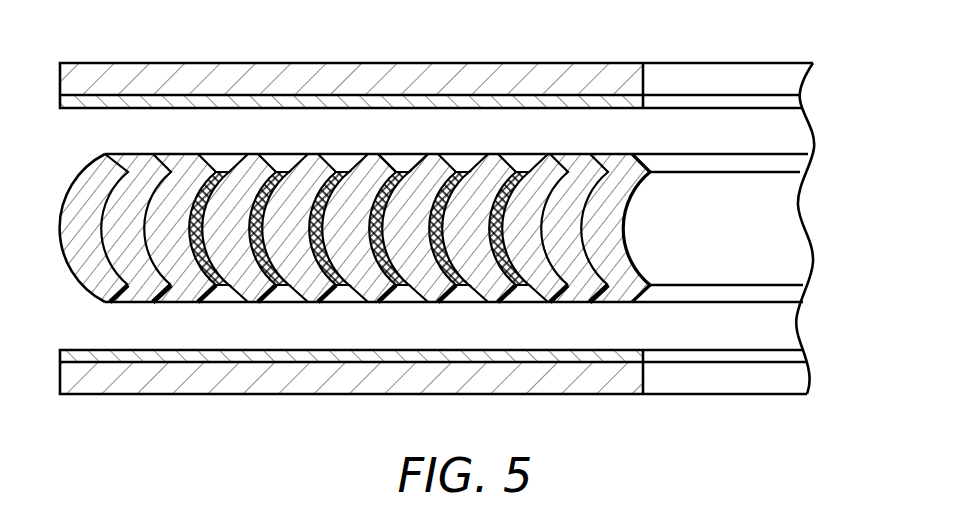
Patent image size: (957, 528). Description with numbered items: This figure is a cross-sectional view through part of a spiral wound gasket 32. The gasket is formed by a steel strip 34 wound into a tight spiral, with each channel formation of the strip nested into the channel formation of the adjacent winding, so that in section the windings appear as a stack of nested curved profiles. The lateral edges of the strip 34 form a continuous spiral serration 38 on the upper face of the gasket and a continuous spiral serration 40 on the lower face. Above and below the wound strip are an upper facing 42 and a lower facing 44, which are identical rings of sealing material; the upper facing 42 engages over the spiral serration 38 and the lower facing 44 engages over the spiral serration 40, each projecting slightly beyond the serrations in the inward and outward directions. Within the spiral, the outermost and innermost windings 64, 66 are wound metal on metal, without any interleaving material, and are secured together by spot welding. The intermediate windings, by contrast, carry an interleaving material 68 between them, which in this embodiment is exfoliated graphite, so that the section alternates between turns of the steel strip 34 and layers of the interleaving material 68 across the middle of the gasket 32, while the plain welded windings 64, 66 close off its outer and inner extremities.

The spiral wound gasket 32 is at (783, 229).
The steel strip 34 is at (698, 160).
The spiral serration 38 is at (248, 153).
The spiral serration 40 is at (312, 302).
The upper facing 42 is at (73, 70).
The lower facing 44 is at (74, 389).
The outermost winding 64 is at (152, 284).
The innermost winding 66 is at (590, 285).
The interleaving material 68 is at (394, 168).